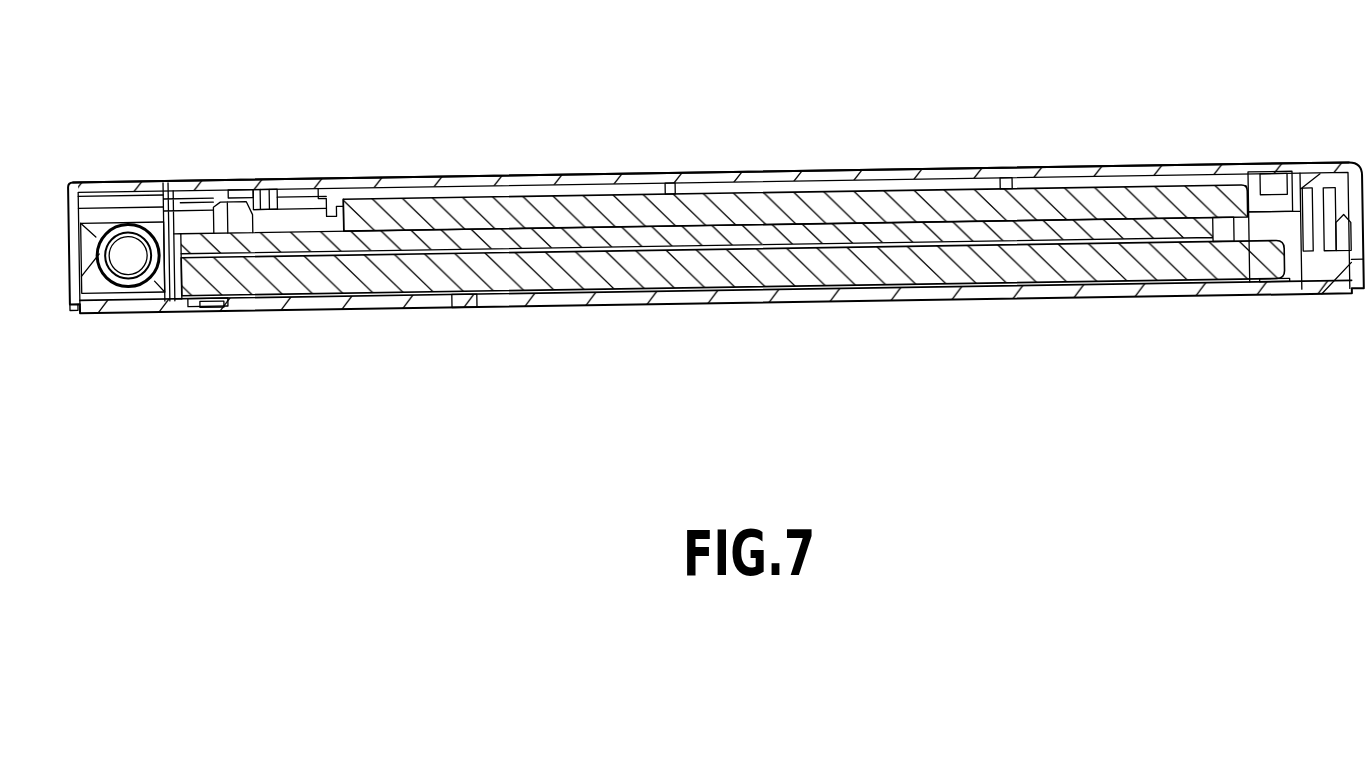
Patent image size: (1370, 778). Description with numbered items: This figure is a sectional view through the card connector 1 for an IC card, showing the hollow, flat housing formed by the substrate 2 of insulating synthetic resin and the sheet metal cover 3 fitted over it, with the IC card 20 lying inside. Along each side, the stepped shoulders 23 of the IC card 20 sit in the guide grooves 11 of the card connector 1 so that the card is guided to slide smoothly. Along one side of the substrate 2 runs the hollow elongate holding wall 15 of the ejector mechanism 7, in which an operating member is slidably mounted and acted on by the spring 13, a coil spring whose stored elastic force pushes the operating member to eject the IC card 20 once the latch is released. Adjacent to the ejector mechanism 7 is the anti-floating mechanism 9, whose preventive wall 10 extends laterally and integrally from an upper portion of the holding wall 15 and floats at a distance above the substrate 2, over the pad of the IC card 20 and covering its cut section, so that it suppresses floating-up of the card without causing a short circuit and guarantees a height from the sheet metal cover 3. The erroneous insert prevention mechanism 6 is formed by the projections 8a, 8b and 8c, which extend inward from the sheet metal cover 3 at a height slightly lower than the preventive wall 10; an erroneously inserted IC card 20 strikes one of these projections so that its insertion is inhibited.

The card connector 1 is at (730, 19).
The substrate 2 is at (740, 310).
The sheet metal cover 3 is at (733, 172).
The erroneous insert prevention mechanism 6 is at (339, 194).
The ejector mechanism 7 is at (103, 291).
The projection 8a is at (1009, 172).
The projection 8b is at (655, 182).
The projection 8c is at (314, 200).
The anti-floating mechanism 9 is at (243, 191).
The preventive wall 10 is at (275, 200).
The guide groove 11 is at (192, 305).
The spring 13 is at (122, 223).
The holding wall 15 is at (163, 246).
The IC card 20 is at (1150, 203).
The stepped shoulder 23 is at (194, 217).